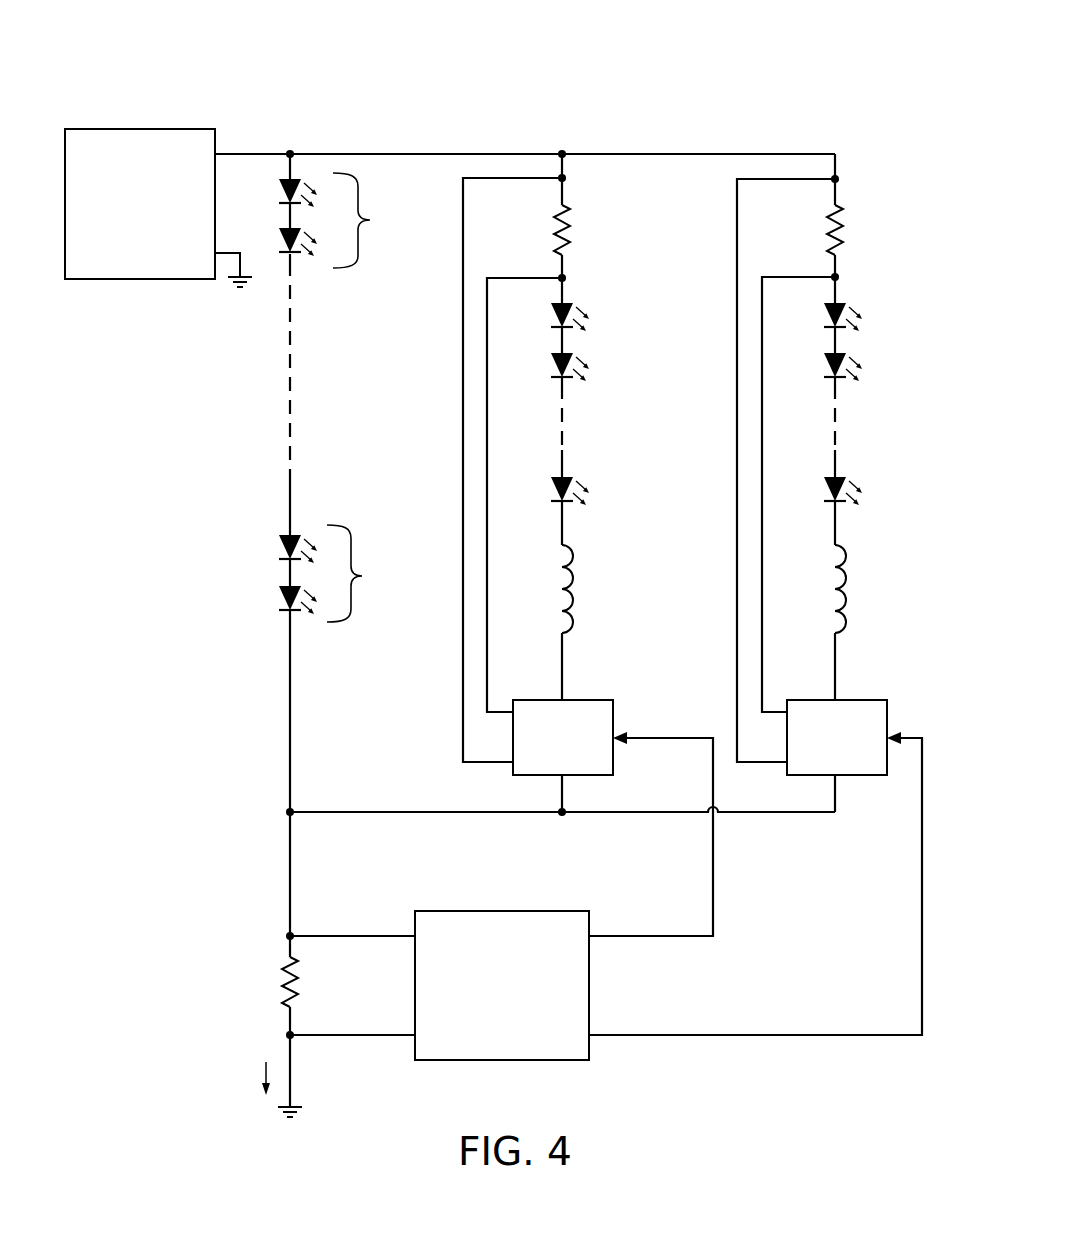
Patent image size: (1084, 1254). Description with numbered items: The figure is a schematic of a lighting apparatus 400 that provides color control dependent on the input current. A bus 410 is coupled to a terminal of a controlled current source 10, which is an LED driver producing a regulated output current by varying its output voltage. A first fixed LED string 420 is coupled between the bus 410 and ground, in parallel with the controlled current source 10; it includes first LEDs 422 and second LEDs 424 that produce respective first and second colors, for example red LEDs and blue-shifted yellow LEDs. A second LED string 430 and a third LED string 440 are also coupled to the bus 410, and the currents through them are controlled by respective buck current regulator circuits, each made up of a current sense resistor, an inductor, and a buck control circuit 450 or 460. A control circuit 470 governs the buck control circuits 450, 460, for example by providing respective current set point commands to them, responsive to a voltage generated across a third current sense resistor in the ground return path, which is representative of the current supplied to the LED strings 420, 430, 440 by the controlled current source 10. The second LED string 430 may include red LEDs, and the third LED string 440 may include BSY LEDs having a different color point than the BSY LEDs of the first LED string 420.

The controlled current source 10 is at (140, 129).
The lighting apparatus 400 is at (547, 68).
The bus 410 is at (388, 154).
The first fixed LED string 420 is at (291, 483).
The first LEDs 422 is at (344, 220).
The second LEDs 424 is at (341, 573).
The second LED string 430 is at (568, 483).
The third LED string 440 is at (837, 483).
The buck control circuit 450 is at (588, 700).
The buck control circuit 460 is at (862, 700).
The control circuit 470 is at (502, 911).